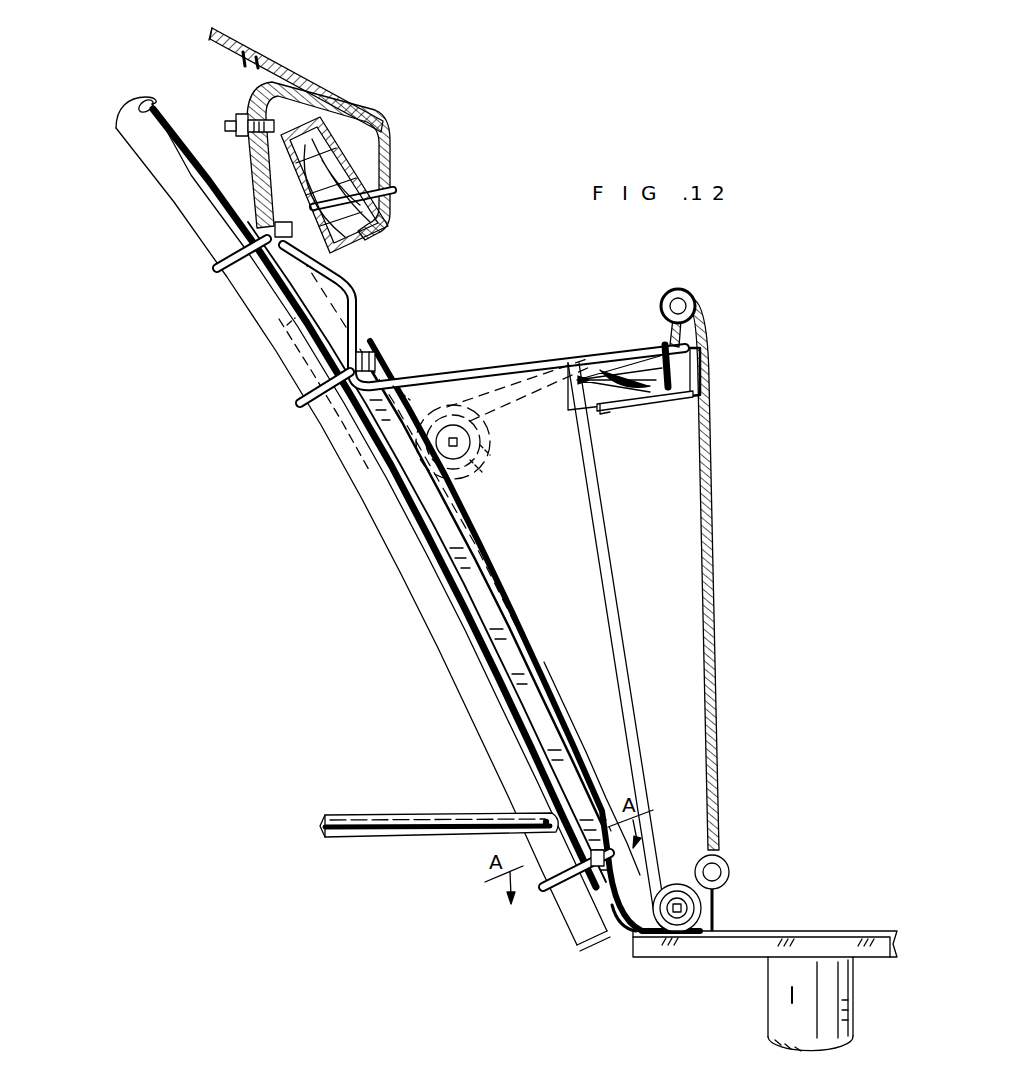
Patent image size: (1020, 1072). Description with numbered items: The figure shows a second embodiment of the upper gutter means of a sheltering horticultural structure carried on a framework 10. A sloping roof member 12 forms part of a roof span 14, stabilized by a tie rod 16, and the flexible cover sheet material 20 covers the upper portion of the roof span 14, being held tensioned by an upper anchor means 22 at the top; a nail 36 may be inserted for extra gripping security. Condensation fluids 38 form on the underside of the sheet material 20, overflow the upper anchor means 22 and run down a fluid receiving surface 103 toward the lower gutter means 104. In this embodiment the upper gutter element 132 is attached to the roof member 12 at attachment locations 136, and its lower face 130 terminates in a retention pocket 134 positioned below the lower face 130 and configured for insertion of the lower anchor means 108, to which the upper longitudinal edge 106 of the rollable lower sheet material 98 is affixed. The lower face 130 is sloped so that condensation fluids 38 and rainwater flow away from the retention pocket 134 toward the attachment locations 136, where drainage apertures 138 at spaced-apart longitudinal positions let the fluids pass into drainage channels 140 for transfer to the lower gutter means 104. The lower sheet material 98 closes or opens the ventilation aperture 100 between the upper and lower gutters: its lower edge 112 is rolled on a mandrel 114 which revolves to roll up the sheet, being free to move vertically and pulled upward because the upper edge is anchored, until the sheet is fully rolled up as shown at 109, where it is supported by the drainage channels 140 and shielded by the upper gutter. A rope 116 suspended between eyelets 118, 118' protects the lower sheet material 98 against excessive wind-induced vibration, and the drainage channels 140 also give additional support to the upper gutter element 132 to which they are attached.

The framework 10 is at (778, 1018).
The roof member 12 is at (400, 565).
The roof span 14 is at (132, 70).
The tie rod 16 is at (345, 815).
The flexible cover sheet material 20 is at (297, 76).
The upper anchor means 22 is at (375, 235).
The nail 36 is at (394, 190).
The condensation fluids 38 is at (247, 55).
The lower sheet material 98 is at (614, 616).
The ventilation aperture 100 is at (554, 549).
The fluid receiving surface 103 is at (342, 277).
The lower gutter means 104 is at (832, 931).
The upper longitudinal edge 106 is at (705, 388).
The lower anchor means 108 is at (623, 364).
The rolled-up lower sheet material 109 is at (484, 477).
The lower edge 112 is at (702, 910).
The mandrel 114 is at (470, 447).
The rope 116 is at (716, 614).
The eyelet 118 is at (710, 306).
The eyelet 118' is at (750, 867).
The lower face 130 is at (538, 378).
The upper gutter element 132 is at (378, 325).
The retention pocket 134 is at (648, 412).
The attachment location 136 is at (376, 362).
The drainage aperture 138 is at (421, 399).
The drainage channel 140 is at (549, 692).